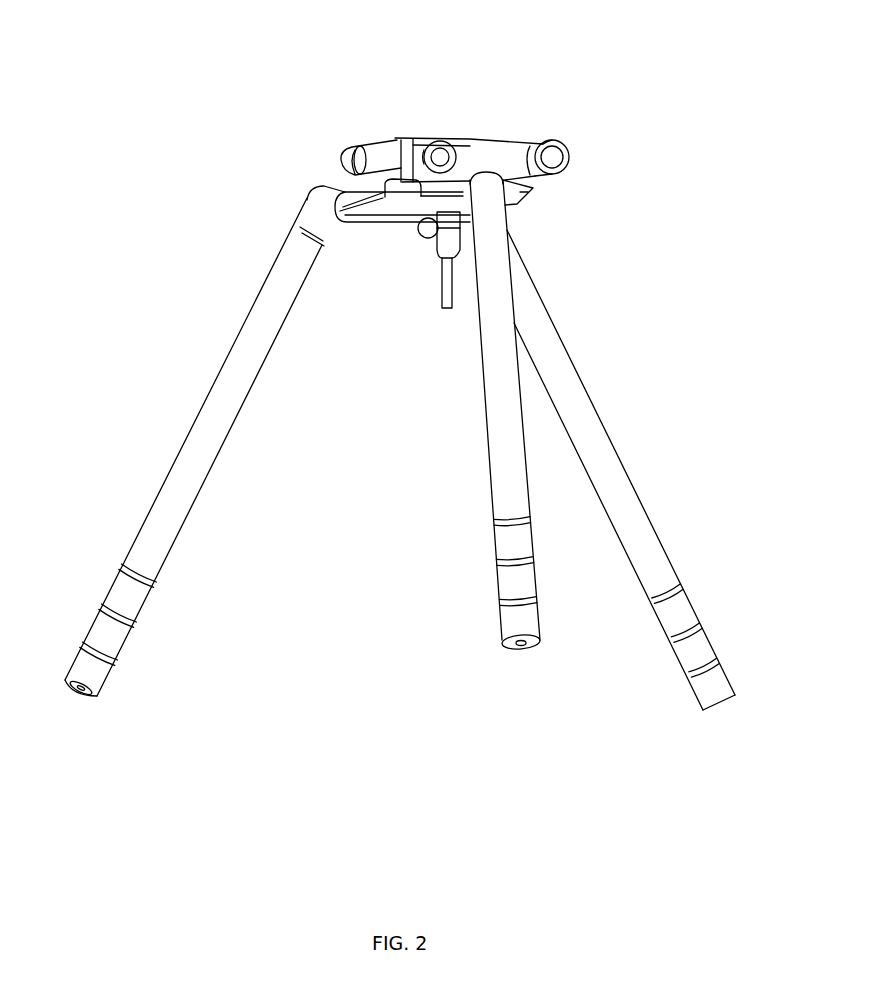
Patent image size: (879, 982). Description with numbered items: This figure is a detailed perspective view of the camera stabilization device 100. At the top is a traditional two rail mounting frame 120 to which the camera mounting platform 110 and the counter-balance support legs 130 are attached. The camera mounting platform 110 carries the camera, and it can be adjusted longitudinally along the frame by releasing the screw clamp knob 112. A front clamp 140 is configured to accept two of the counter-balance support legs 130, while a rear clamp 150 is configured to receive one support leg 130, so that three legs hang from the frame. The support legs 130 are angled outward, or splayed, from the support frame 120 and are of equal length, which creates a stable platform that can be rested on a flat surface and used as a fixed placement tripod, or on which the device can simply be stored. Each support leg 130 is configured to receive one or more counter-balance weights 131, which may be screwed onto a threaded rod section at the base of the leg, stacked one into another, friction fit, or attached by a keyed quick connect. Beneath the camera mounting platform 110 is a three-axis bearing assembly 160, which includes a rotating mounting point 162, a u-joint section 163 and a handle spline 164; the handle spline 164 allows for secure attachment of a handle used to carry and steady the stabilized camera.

The camera stabilization device 100 is at (183, 417).
The camera mounting platform 110 is at (336, 137).
The screw clamp knob 112 is at (502, 128).
The two rail mounting frame 120 is at (574, 131).
The counter-balance support legs 130 is at (611, 415).
The counter-balance weights 131 is at (736, 663).
The front clamp 140 is at (290, 196).
The rear clamp 150 is at (573, 180).
The three-axis bearing assembly 160 is at (448, 315).
The rotating mounting point 162 is at (434, 208).
The u-joint section 163 is at (424, 262).
The handle spline 164 is at (430, 325).